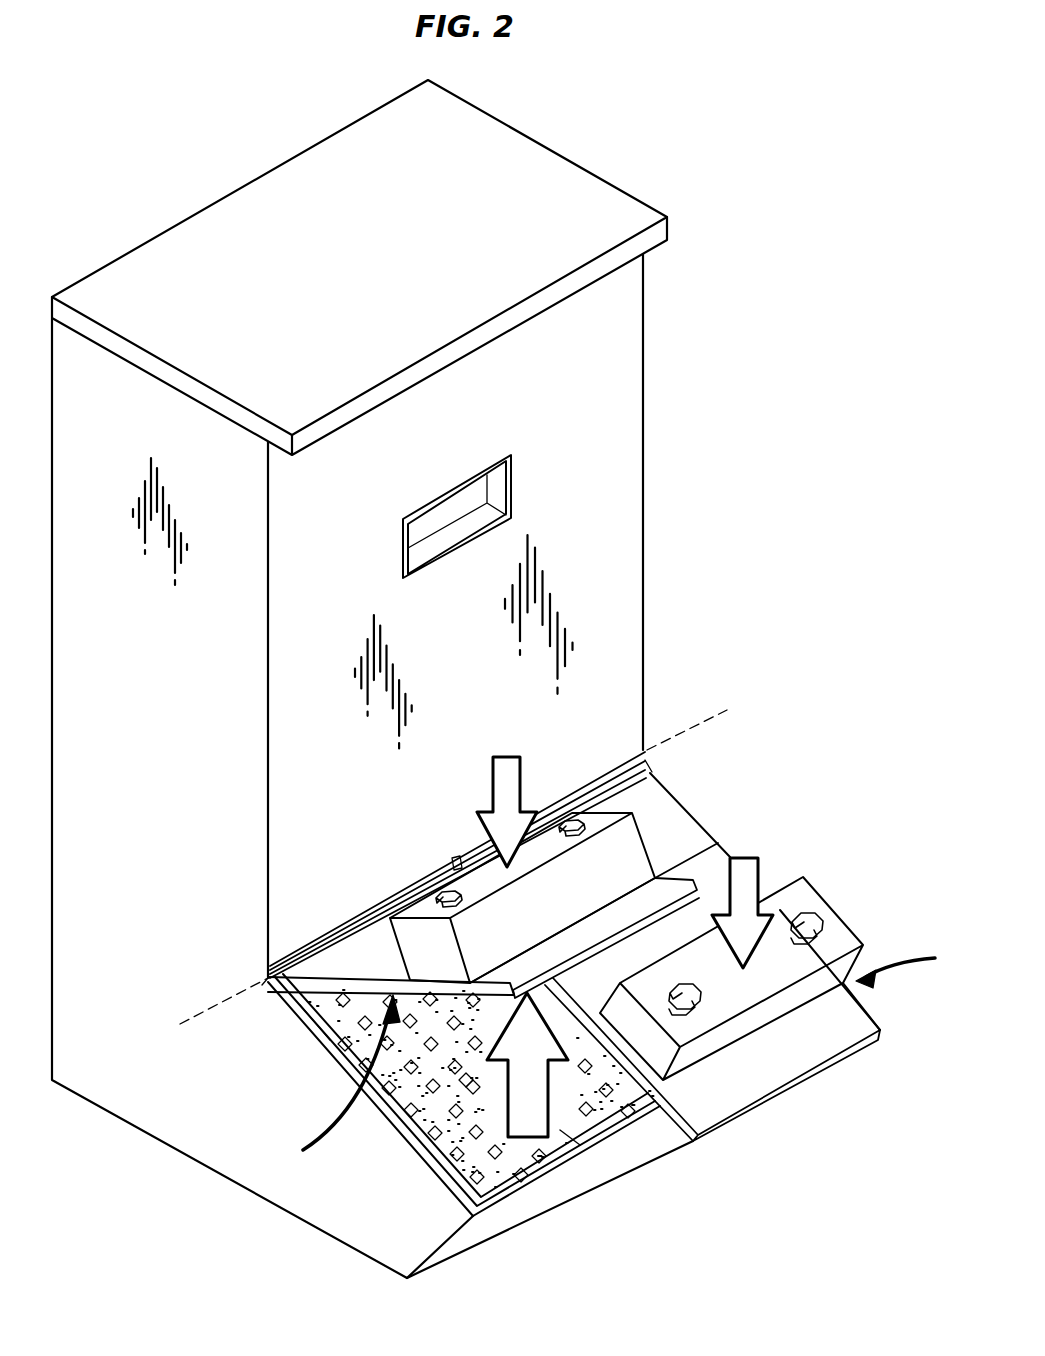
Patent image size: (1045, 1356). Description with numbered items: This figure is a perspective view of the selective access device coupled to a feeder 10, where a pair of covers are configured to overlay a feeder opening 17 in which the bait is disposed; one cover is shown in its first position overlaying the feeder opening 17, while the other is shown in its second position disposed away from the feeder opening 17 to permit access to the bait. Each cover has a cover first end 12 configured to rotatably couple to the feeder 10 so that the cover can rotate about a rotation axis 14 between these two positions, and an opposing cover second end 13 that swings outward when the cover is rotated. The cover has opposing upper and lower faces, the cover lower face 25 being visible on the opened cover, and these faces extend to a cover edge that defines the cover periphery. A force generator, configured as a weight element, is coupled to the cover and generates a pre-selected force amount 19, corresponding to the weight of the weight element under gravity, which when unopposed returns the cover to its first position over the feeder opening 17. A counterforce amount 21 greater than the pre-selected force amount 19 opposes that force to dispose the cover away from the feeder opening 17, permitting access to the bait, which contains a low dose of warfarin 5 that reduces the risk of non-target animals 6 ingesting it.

The feeder 10 is at (612, 539).
The rotation axis 14 is at (454, 871).
The cover first end 12 is at (280, 985).
The pre-selected force amount 19 is at (508, 795).
The cover second end 13 is at (835, 1063).
The non-target animals 6 is at (570, 947).
The feeder opening 17 is at (601, 1099).
The warfarin 5 is at (427, 1087).
The cover lower face 25 is at (466, 1085).
The counterforce amount 21 is at (575, 1135).